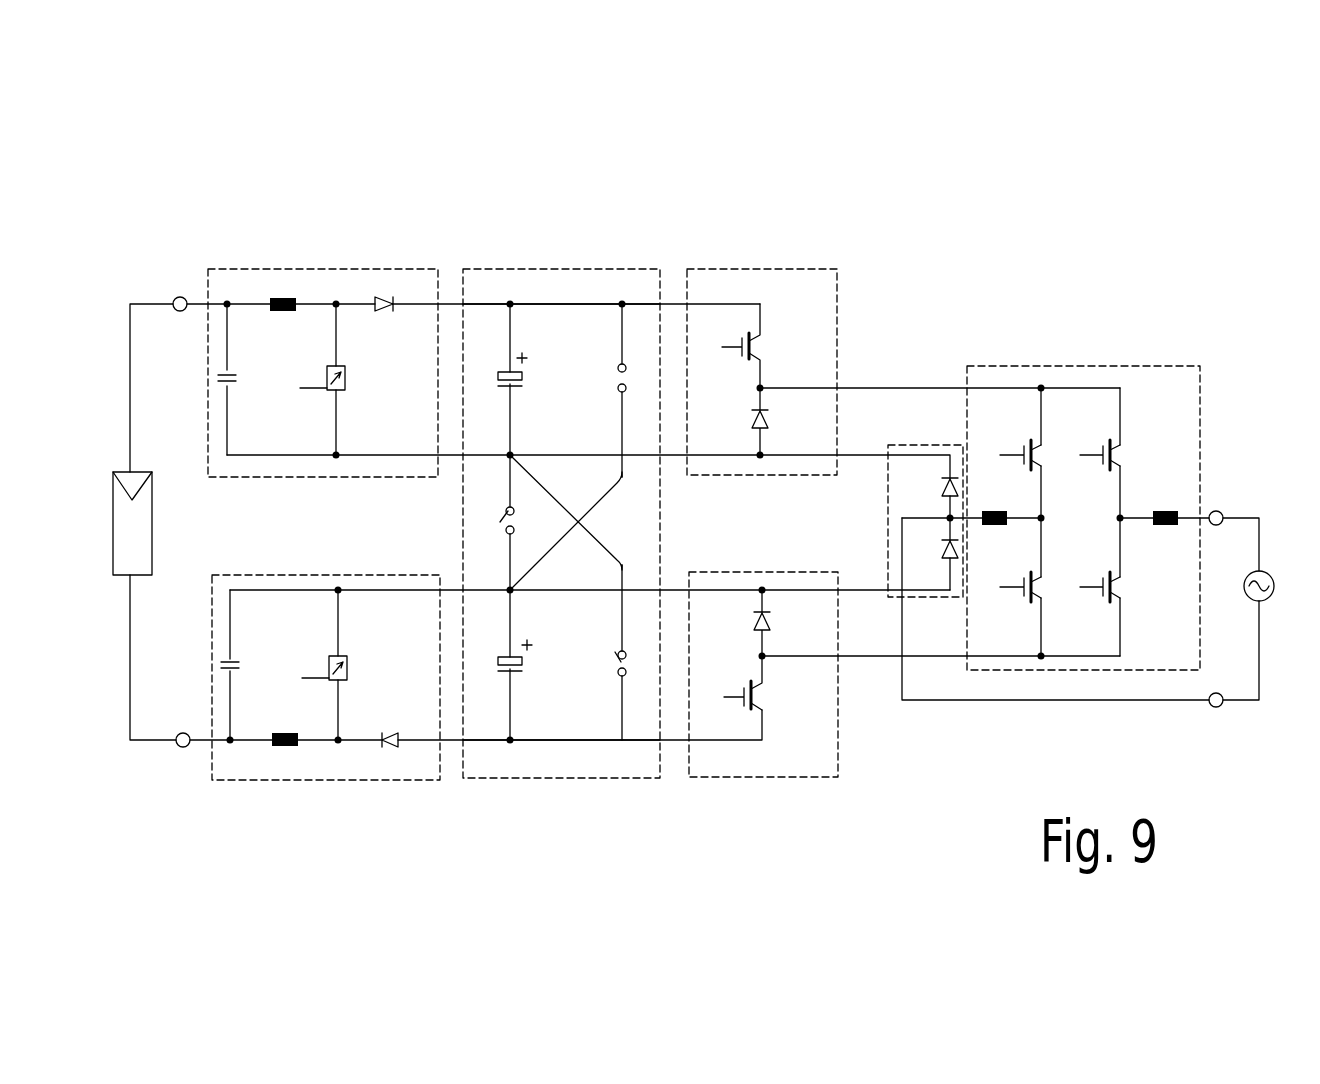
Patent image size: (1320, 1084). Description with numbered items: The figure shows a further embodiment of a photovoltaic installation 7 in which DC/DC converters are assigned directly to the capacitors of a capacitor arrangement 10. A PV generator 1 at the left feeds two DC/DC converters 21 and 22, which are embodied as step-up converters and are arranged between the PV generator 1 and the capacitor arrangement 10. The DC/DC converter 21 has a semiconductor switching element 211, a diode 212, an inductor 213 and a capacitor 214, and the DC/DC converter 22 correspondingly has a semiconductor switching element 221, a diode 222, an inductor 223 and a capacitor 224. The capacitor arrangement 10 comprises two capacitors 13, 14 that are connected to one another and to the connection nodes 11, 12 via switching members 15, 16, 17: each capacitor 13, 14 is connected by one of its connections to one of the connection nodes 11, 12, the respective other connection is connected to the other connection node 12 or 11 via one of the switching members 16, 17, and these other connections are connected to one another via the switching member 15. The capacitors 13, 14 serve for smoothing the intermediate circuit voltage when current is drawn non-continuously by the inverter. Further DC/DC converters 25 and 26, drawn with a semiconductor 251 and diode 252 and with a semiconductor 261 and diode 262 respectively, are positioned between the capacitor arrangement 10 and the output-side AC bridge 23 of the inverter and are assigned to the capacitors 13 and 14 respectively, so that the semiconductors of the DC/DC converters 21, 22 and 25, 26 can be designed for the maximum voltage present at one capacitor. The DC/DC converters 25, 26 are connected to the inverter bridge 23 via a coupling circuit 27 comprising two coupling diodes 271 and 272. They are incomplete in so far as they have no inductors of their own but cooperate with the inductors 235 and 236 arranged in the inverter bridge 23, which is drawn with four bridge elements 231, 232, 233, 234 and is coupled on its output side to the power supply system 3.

The PV generator 1 is at (113, 548).
The power supply system 3 is at (1266, 572).
The photovoltaic installation 7 is at (1038, 241).
The capacitor arrangement 10 is at (525, 512).
The connection node 11 is at (537, 302).
The connection node 12 is at (565, 742).
The capacitor 13 is at (518, 386).
The capacitor 14 is at (520, 670).
The switching member 15 is at (500, 522).
The switching member 16 is at (620, 370).
The switching member 17 is at (616, 660).
The DC/DC converter 21 is at (313, 324).
The DC/DC converter 22 is at (323, 727).
The inverter bridge 23 is at (1110, 513).
The DC/DC converter 25 is at (813, 329).
The DC/DC converter 26 is at (785, 691).
The coupling circuit 27 is at (861, 556).
The semiconductor switching element 211 is at (345, 385).
The diode 212 is at (385, 298).
The inductor 213 is at (275, 300).
The capacitor 214 is at (232, 385).
The semiconductor switching element 221 is at (348, 675).
The diode 222 is at (393, 748).
The inductor 223 is at (283, 748).
The capacitor 224 is at (240, 662).
The bridge switch 231 is at (1037, 458).
The bridge switch 232 is at (1035, 584).
The bridge switch 233 is at (1117, 455).
The bridge switch 234 is at (1117, 590).
The inductor 235 is at (1160, 511).
The inductor 236 is at (1008, 518).
The switch 251 is at (758, 349).
The diode 252 is at (770, 423).
The switch 261 is at (766, 700).
The diode 262 is at (768, 625).
The coupling diode 271 is at (942, 485).
The coupling diode 272 is at (950, 558).